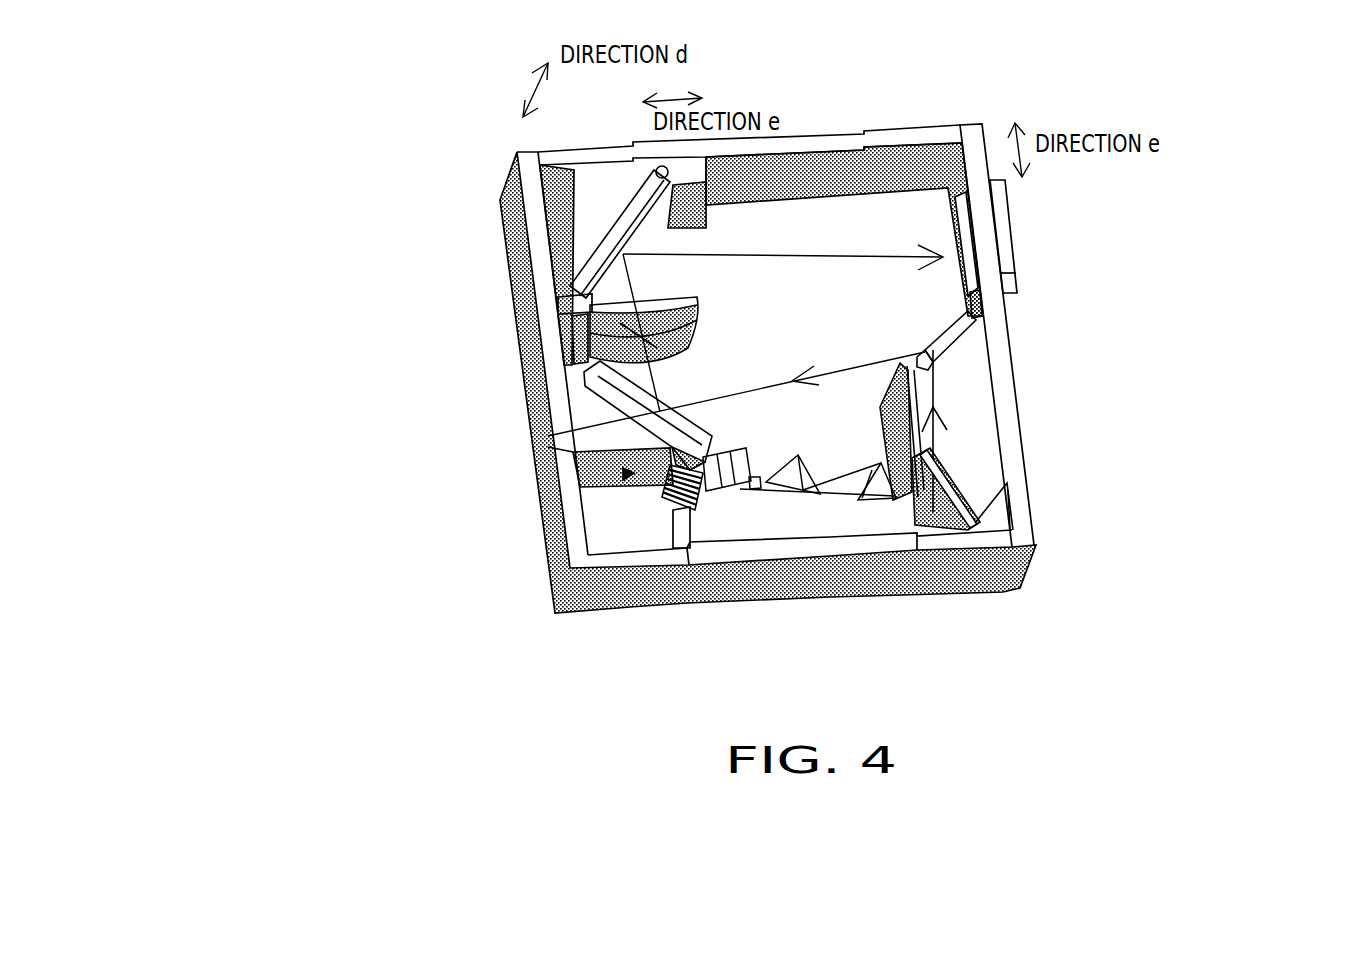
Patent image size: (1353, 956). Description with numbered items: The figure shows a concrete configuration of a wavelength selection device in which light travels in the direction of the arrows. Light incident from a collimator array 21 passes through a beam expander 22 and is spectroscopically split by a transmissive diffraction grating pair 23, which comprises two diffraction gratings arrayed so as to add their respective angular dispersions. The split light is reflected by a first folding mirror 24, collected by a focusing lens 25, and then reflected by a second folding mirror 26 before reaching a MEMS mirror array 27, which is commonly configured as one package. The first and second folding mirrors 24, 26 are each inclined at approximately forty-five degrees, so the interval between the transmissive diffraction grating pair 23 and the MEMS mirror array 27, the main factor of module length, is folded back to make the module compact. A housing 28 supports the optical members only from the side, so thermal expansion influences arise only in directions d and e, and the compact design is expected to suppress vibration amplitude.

The collimator array 21 is at (687, 513).
The beam expander 22 is at (870, 487).
The transmissive diffraction grating pair 23 is at (935, 350).
The first folding mirror 24 is at (548, 434).
The focusing lens 25 is at (590, 326).
The second folding mirror 26 is at (582, 277).
The MEMS mirror array 27 is at (997, 226).
The housing 28 is at (998, 333).